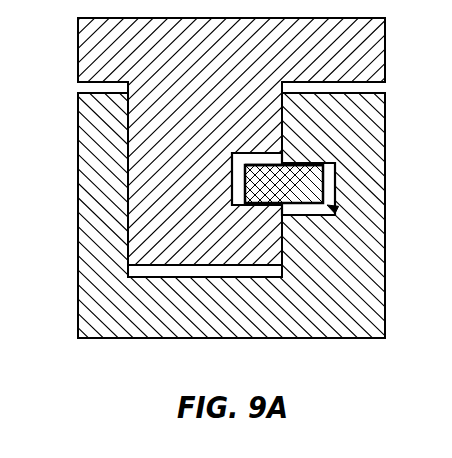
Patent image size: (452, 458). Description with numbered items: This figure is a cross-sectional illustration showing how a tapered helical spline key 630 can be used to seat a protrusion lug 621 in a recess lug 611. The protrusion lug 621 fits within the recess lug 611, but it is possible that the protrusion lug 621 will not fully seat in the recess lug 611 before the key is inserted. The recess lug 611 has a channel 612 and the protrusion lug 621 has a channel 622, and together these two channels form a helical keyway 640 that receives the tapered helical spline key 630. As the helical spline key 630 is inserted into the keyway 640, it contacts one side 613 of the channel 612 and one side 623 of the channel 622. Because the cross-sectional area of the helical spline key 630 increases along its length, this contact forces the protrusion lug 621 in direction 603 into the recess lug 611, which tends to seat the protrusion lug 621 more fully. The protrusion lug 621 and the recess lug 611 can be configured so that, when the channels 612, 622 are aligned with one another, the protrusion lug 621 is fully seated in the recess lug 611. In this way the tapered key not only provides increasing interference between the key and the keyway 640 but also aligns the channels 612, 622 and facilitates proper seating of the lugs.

The direction 603 is at (451, 49).
The recess lug 611 is at (102, 229).
The channel 612 is at (317, 217).
The side of the channel 613 is at (305, 164).
The protrusion lug 621 is at (152, 118).
The channel 622 is at (238, 158).
The side of the channel 623 is at (265, 207).
The tapered helical spline key 630 is at (323, 182).
The helical keyway 640 is at (336, 210).